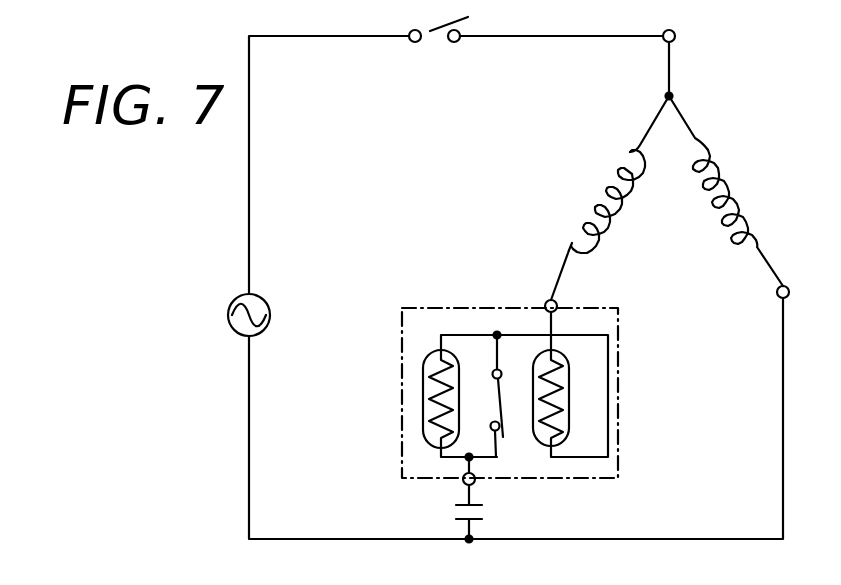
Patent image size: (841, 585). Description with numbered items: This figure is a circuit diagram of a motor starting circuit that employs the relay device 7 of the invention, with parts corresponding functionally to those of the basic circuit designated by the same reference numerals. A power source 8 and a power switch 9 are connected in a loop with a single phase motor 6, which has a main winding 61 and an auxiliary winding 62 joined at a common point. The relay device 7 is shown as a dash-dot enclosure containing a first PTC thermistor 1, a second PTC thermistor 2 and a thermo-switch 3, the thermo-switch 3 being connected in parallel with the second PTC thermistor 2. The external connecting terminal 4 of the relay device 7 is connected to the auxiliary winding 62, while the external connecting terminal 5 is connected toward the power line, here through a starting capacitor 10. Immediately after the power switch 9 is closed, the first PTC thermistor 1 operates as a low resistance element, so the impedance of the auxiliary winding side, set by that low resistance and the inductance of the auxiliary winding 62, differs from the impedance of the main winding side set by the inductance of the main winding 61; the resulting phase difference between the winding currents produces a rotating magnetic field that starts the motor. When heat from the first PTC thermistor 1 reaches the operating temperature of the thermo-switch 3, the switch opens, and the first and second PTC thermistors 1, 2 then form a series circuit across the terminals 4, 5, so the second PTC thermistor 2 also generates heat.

The first PTC thermistor 1 is at (569, 390).
The second PTC thermistor 2 is at (422, 373).
The thermo-switch 3 is at (493, 393).
The external connecting terminal 4 is at (545, 302).
The external connecting terminal 5 is at (463, 484).
The single phase motor 6 is at (670, 174).
The main winding 61 is at (731, 170).
The auxiliary winding 62 is at (612, 163).
The relay device 7 is at (416, 306).
The power source 8 is at (266, 303).
The power switch 9 is at (432, 43).
The starting capacitor 10 is at (481, 512).